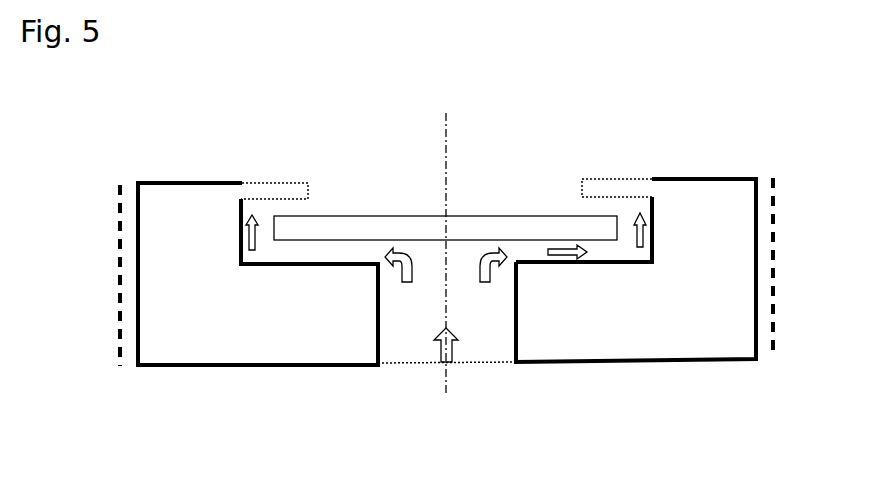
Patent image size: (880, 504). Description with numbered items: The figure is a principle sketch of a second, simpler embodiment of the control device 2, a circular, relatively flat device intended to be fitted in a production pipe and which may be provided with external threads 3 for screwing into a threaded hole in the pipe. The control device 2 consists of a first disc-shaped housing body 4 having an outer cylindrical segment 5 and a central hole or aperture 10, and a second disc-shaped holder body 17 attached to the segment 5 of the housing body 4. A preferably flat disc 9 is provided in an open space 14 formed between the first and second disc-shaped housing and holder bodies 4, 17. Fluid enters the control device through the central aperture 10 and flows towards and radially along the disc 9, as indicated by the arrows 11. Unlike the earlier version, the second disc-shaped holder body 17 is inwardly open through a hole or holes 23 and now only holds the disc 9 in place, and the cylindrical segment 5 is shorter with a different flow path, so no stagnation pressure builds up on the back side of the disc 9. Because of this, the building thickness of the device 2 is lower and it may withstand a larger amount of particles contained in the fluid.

The control device 2 is at (225, 380).
The external threads 3 is at (768, 187).
The first disc-shaped housing body 4 is at (588, 305).
The outer cylindrical segment 5 is at (738, 243).
The disc 9 is at (430, 232).
The central hole or aperture 10 is at (412, 297).
The arrows 11 is at (447, 362).
The open space 14 is at (268, 230).
The second disc-shaped holder body 17 is at (275, 182).
The hole 23 is at (508, 185).